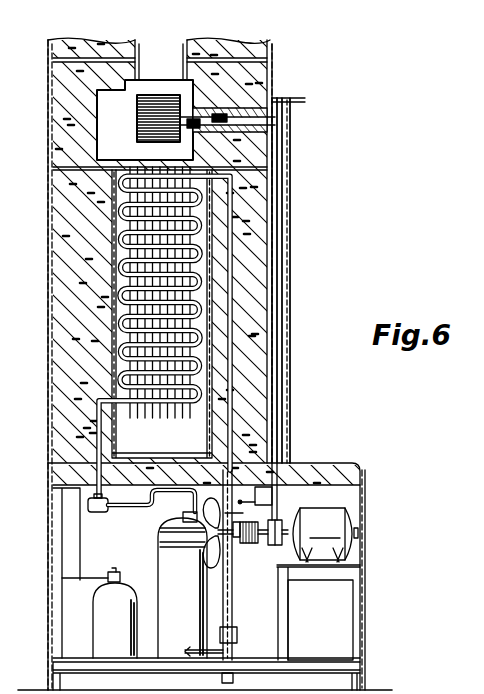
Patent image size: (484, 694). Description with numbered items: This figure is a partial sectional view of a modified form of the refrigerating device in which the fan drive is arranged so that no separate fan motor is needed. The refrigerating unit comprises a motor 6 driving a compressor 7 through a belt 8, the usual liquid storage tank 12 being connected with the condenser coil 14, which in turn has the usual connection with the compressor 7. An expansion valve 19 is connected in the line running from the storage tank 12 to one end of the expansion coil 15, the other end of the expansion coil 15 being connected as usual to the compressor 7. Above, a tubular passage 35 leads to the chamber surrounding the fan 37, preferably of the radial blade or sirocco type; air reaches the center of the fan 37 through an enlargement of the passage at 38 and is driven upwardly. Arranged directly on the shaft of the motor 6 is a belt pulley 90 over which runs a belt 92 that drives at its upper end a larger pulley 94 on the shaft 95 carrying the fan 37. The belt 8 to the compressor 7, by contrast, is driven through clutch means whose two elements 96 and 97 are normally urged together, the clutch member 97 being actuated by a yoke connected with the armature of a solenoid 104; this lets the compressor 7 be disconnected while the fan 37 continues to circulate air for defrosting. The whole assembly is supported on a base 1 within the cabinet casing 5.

The base 1 is at (93, 666).
The cabinet casing 5 is at (47, 578).
The motor 6 is at (318, 584).
The compressor 7 is at (190, 585).
The belt 8 is at (232, 574).
The liquid storage tank 12 is at (99, 613).
The condenser coil 14 is at (70, 551).
The expansion coil 15 is at (112, 250).
The expansion valve 19 is at (89, 512).
The tubular passage 35 is at (168, 45).
The fan 37 is at (159, 94).
The enlargement of the passage 38 is at (100, 122).
The belt pulley 90 is at (280, 522).
The belt 92 is at (276, 250).
The larger pulley 94 is at (281, 127).
The shaft 95 is at (238, 110).
The clutch element 96 is at (258, 548).
The clutch member 97 is at (250, 544).
The solenoid 104 is at (263, 506).